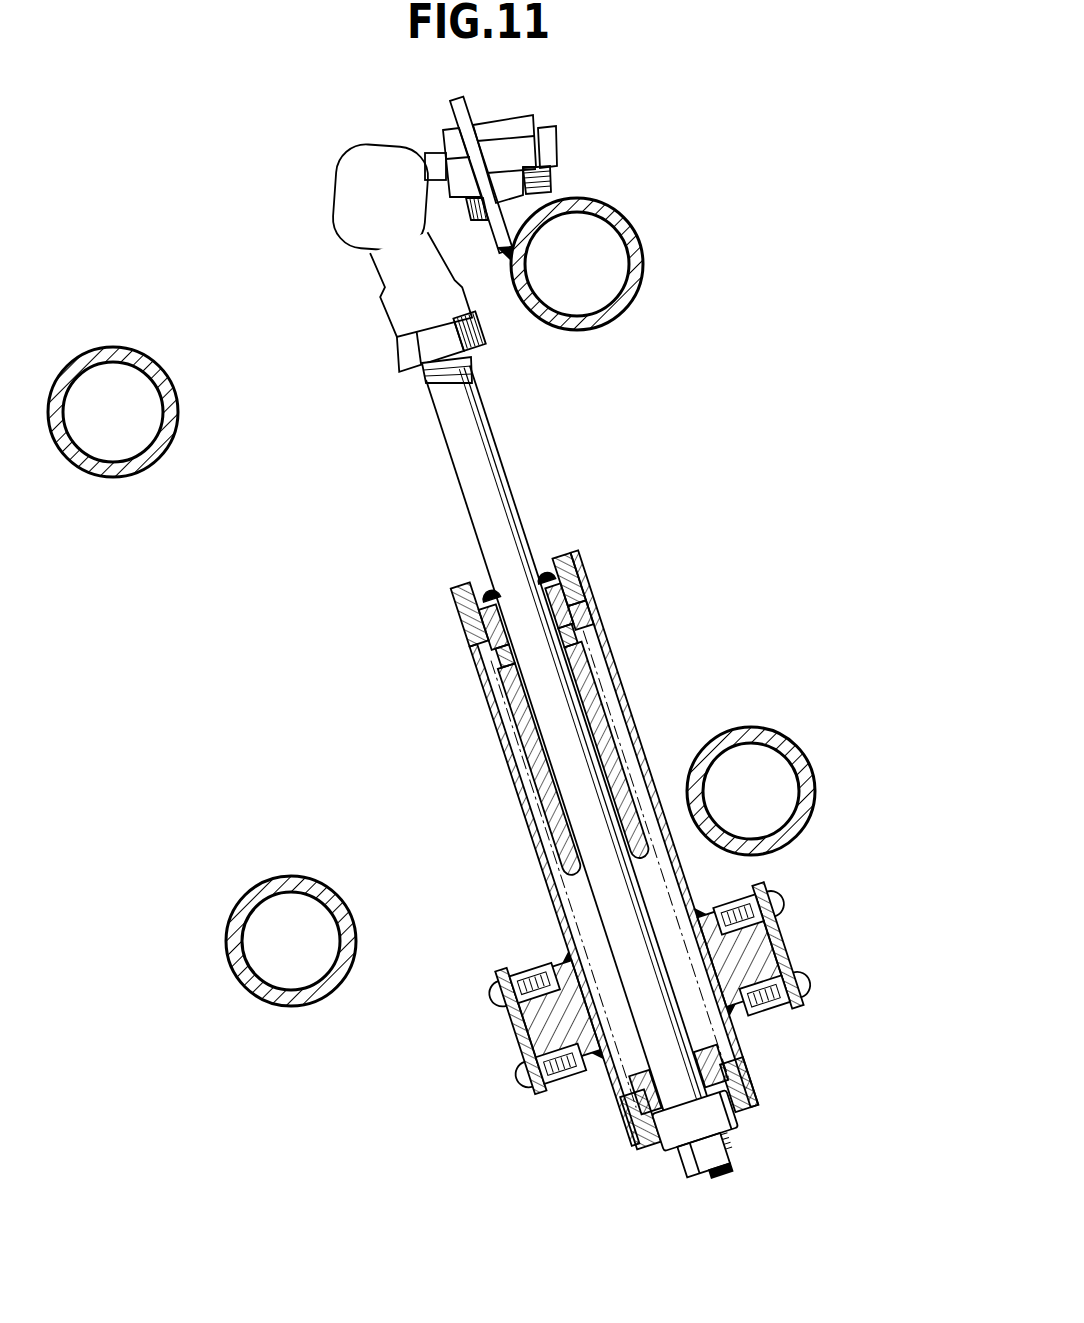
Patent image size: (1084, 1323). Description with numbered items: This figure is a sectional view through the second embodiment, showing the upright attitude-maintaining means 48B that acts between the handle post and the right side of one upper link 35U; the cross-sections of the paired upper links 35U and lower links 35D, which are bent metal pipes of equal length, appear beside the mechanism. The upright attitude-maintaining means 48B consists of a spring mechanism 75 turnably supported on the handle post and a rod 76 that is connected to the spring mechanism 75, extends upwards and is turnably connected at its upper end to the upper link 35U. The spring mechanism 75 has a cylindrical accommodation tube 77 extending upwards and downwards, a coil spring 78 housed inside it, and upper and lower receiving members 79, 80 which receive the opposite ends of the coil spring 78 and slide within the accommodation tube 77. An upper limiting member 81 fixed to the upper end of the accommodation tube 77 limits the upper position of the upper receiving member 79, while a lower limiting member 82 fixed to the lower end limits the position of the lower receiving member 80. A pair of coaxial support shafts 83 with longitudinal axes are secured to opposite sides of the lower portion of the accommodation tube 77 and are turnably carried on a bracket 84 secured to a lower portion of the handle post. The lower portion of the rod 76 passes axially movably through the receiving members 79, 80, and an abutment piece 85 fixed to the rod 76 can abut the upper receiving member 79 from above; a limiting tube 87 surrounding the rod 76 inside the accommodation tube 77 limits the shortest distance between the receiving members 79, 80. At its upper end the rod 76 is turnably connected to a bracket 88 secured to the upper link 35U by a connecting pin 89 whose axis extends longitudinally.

The upper link 35U is at (102, 348).
The lower link 35D is at (805, 798).
The upright attitude-maintaining means 48B is at (592, 577).
The spring mechanism 75 is at (519, 803).
The rod 76 is at (458, 444).
The accommodation tube 77 is at (623, 712).
The coil spring 78 is at (622, 1077).
The upper receiving member 79 is at (482, 657).
The lower receiving member 80 is at (755, 1095).
The upper limiting member 81 is at (560, 555).
The lower limiting member 82 is at (650, 1147).
The support shaft 83 is at (765, 951).
The bracket 84 is at (502, 972).
The abutment piece 85 is at (477, 635).
The limiting tube 87 is at (527, 720).
The bracket 88 is at (465, 100).
The connecting pin 89 is at (557, 140).